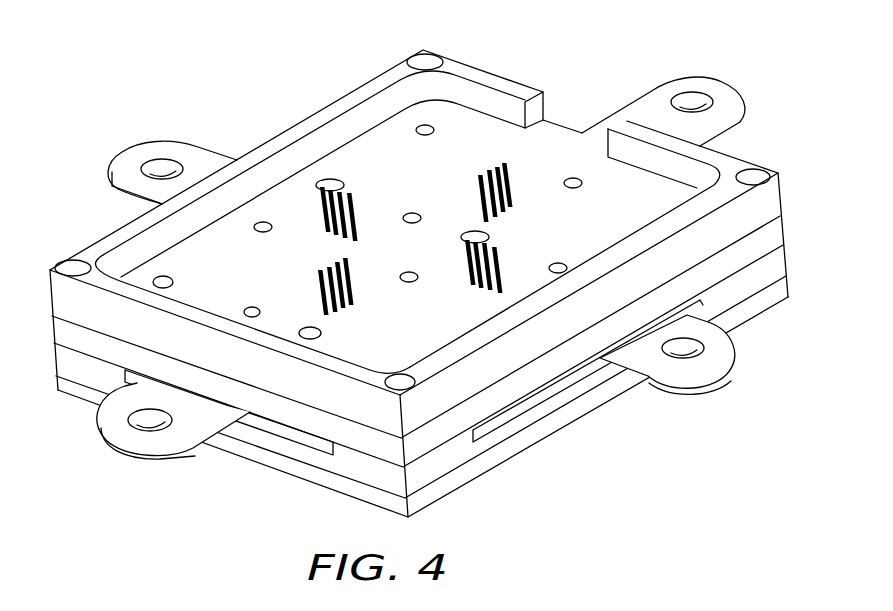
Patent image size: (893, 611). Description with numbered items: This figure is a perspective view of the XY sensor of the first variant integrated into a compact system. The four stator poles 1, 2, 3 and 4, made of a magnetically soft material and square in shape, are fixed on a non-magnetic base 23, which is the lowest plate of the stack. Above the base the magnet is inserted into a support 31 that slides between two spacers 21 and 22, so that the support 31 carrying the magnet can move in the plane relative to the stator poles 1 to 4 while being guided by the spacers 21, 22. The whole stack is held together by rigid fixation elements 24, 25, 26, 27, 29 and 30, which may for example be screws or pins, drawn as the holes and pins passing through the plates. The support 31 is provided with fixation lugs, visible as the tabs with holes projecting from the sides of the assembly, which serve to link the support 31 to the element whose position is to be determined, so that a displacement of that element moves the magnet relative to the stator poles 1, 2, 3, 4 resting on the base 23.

The stator pole 1 is at (367, 131).
The stator pole 2 is at (665, 212).
The stator pole 3 is at (321, 333).
The stator pole 4 is at (157, 258).
The spacer 21 is at (441, 438).
The spacer 22 is at (548, 428).
The non-magnetic base 23 is at (772, 198).
The rigid fixation element 24 is at (423, 127).
The rigid fixation element 25 is at (580, 186).
The rigid fixation element 26 is at (557, 265).
The rigid fixation element 27 is at (367, 362).
The rigid fixation element 29 is at (174, 282).
The rigid fixation element 30 is at (265, 232).
The support 31 is at (720, 356).